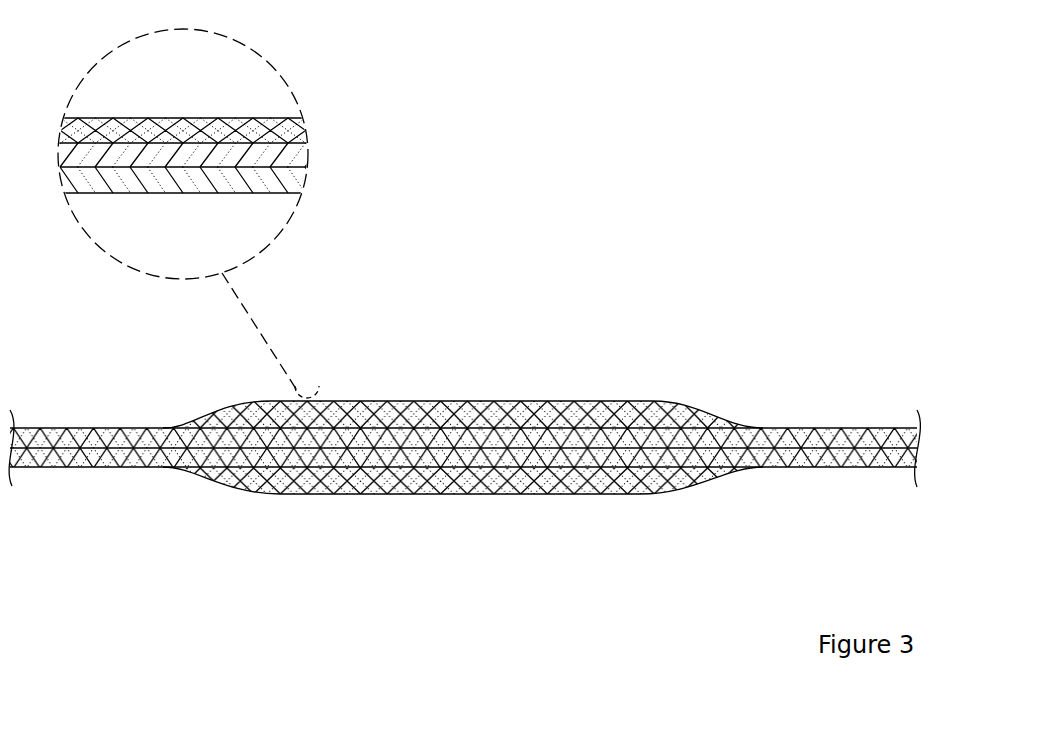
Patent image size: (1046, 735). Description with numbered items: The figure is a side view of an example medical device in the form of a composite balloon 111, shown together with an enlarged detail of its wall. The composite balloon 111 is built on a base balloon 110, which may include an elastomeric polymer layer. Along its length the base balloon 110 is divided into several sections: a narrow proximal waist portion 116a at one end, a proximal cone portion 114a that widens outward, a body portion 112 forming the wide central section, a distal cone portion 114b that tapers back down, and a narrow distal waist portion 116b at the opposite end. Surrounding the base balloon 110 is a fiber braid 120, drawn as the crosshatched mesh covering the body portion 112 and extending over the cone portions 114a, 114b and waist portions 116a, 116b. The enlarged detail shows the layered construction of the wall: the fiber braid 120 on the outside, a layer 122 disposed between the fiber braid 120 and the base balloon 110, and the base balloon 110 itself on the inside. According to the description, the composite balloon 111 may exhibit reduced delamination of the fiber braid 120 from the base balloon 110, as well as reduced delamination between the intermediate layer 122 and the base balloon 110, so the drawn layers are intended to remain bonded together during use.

The base balloon 110 is at (207, 180).
The composite balloon 111 is at (466, 358).
The body portion 112 is at (465, 495).
The proximal cone portion 114a is at (213, 470).
The distal cone portion 114b is at (708, 415).
The proximal waist portion 116a is at (105, 458).
The distal waist portion 116b is at (817, 438).
The fiber braid 120 is at (168, 124).
The layer 122 is at (160, 162).